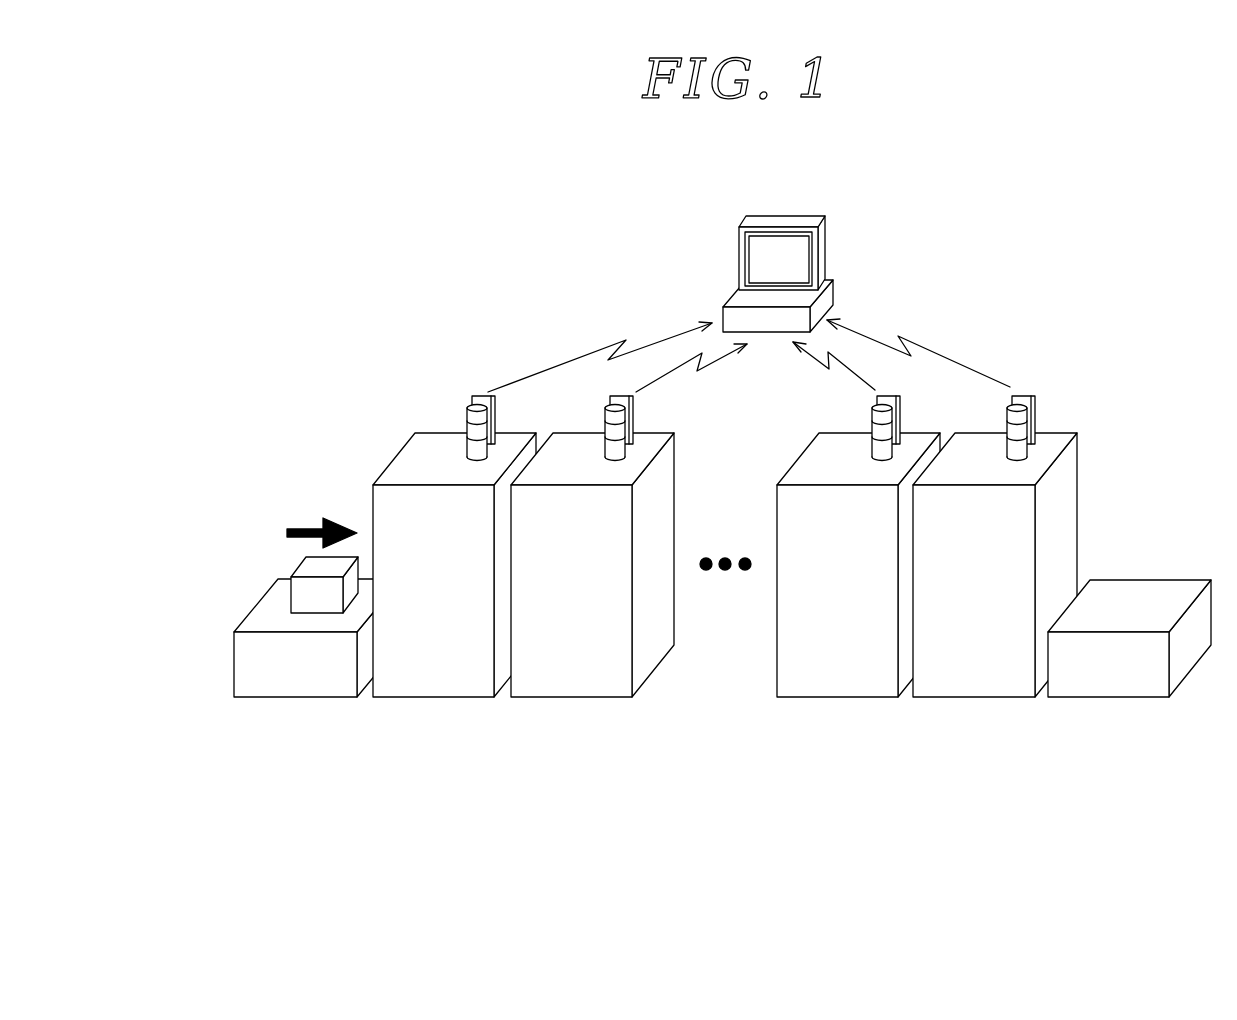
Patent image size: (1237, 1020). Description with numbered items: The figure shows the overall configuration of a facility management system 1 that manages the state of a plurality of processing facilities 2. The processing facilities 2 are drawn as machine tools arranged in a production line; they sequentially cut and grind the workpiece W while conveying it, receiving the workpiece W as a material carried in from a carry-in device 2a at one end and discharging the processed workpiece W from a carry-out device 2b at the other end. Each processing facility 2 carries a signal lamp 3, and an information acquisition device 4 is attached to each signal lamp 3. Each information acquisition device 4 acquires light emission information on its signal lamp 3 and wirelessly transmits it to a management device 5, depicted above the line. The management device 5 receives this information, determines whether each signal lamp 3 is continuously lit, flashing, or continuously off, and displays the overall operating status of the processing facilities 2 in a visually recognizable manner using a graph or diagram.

The facility management system 1 is at (1022, 317).
The processing facility 2 is at (440, 697).
The carry-in device 2a is at (307, 697).
The carry-out device 2b is at (1110, 697).
The signal lamp 3 is at (467, 424).
The information acquisition device 4 is at (481, 395).
The management device 5 is at (826, 250).
The workpiece W is at (297, 567).